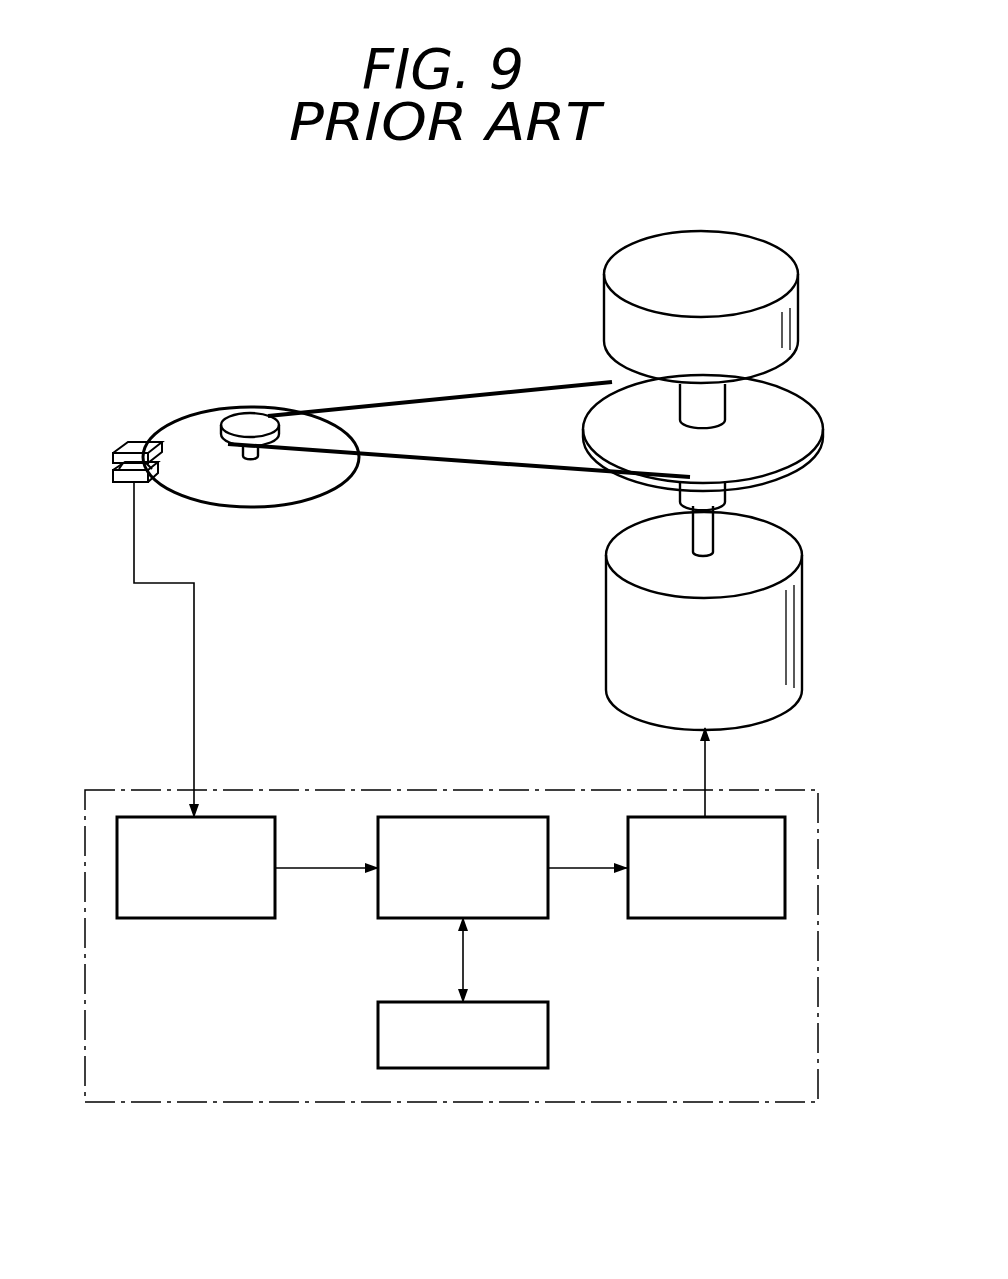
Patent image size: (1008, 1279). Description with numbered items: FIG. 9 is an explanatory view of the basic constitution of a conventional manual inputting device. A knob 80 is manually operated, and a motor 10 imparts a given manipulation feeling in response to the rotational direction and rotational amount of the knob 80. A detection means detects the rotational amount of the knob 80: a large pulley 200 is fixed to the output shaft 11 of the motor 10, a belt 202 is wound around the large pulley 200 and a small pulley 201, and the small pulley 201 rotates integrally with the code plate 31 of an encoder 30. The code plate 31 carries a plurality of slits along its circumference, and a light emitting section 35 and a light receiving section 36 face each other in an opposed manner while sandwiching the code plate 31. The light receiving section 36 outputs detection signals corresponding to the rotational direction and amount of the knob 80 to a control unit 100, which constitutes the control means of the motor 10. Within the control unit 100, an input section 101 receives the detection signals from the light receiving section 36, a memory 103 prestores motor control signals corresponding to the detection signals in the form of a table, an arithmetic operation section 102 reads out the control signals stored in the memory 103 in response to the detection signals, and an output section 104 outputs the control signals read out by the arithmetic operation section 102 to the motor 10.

The motor 10 is at (783, 648).
The output shaft 11 is at (703, 537).
The encoder 30 is at (364, 432).
The code plate 31 is at (322, 497).
The light emitting section 35 is at (127, 443).
The light receiving section 36 is at (120, 483).
The knob 80 is at (787, 270).
The control unit 100 is at (818, 828).
The input section 101 is at (177, 922).
The arithmetic operation section 102 is at (405, 922).
The memory 103 is at (552, 1018).
The output section 104 is at (728, 922).
The large pulley 200 is at (793, 398).
The small pulley 201 is at (250, 418).
The belt 202 is at (455, 397).